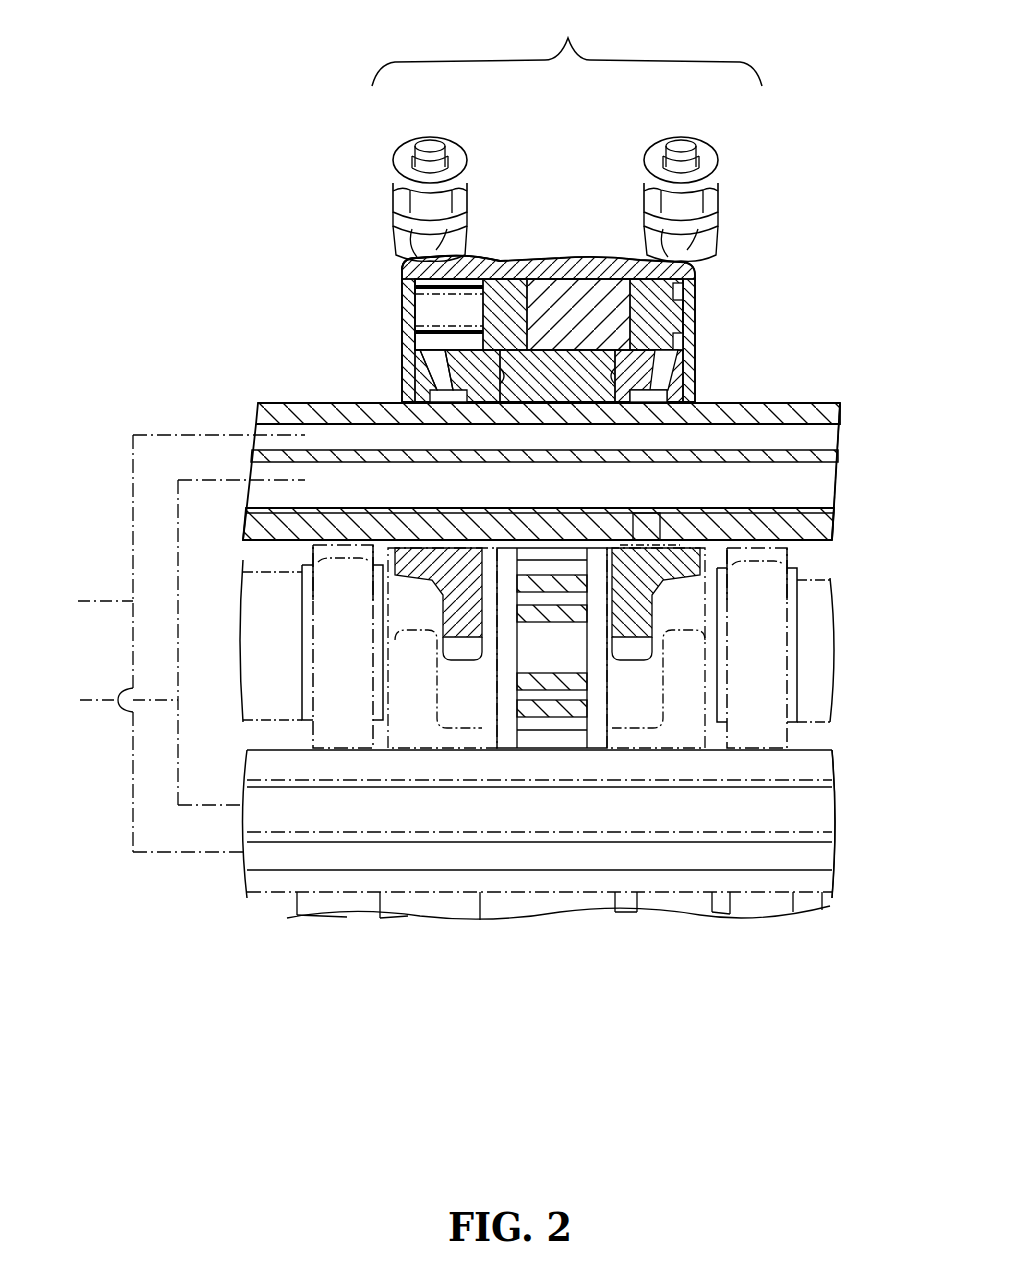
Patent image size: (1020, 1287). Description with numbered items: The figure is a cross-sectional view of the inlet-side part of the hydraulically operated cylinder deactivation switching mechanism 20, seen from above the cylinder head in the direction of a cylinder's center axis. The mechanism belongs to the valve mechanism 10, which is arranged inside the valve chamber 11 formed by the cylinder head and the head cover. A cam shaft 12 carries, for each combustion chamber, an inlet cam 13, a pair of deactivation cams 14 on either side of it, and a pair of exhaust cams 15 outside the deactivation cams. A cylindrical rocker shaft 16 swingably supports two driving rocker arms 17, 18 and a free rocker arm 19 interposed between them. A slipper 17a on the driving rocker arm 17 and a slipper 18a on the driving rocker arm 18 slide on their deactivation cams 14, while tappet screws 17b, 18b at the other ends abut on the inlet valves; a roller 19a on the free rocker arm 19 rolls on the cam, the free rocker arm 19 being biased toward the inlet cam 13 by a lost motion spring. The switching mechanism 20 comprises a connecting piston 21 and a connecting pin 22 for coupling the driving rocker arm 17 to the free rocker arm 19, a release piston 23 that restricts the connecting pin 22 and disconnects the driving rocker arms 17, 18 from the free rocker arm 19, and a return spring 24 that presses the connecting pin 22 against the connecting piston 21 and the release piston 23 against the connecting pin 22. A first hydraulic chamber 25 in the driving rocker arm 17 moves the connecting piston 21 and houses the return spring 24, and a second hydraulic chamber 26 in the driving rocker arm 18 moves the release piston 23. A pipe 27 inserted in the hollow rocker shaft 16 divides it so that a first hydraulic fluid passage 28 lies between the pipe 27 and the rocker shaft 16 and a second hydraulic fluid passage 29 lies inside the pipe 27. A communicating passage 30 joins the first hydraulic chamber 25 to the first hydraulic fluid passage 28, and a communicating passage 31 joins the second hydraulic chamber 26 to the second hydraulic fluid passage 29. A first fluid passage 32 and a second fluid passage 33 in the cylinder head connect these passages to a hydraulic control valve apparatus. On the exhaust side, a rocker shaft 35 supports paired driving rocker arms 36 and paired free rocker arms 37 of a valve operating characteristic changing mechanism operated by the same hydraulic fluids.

The valve mechanism 10 is at (807, 363).
The valve chamber 11 is at (265, 362).
The cam shaft 12 is at (817, 580).
The inlet cam 13 is at (575, 752).
The deactivation cam 14 is at (455, 752).
The exhaust cam 15 is at (340, 752).
The rocker shaft 16 is at (750, 400).
The driving rocker arm 17 is at (408, 360).
The slipper 17a is at (466, 645).
The tappet screw 17b is at (413, 149).
The driving rocker arm 18 is at (690, 337).
The slipper 18a is at (626, 642).
The tappet screw 18b is at (718, 150).
The free rocker arm 19 is at (553, 258).
The roller 19a is at (547, 750).
The cylinder deactivation switching mechanism 20 is at (567, 43).
The connecting piston 21 is at (514, 290).
The connecting pin 22 is at (585, 290).
The release piston 23 is at (640, 279).
The return spring 24 is at (405, 297).
The first hydraulic chamber 25 is at (433, 316).
The second hydraulic chamber 26 is at (684, 291).
The pipe 27 is at (835, 474).
The first hydraulic fluid passage 28 is at (822, 441).
The second hydraulic fluid passage 29 is at (823, 498).
The communicating passage 30 is at (440, 369).
The communicating passage 31 is at (672, 377).
The first fluid passage 32 is at (193, 432).
The second fluid passage 33 is at (241, 642).
The rocker shaft 35 is at (822, 892).
The driving rocker arm 36 is at (413, 907).
The free rocker arm 37 is at (337, 906).